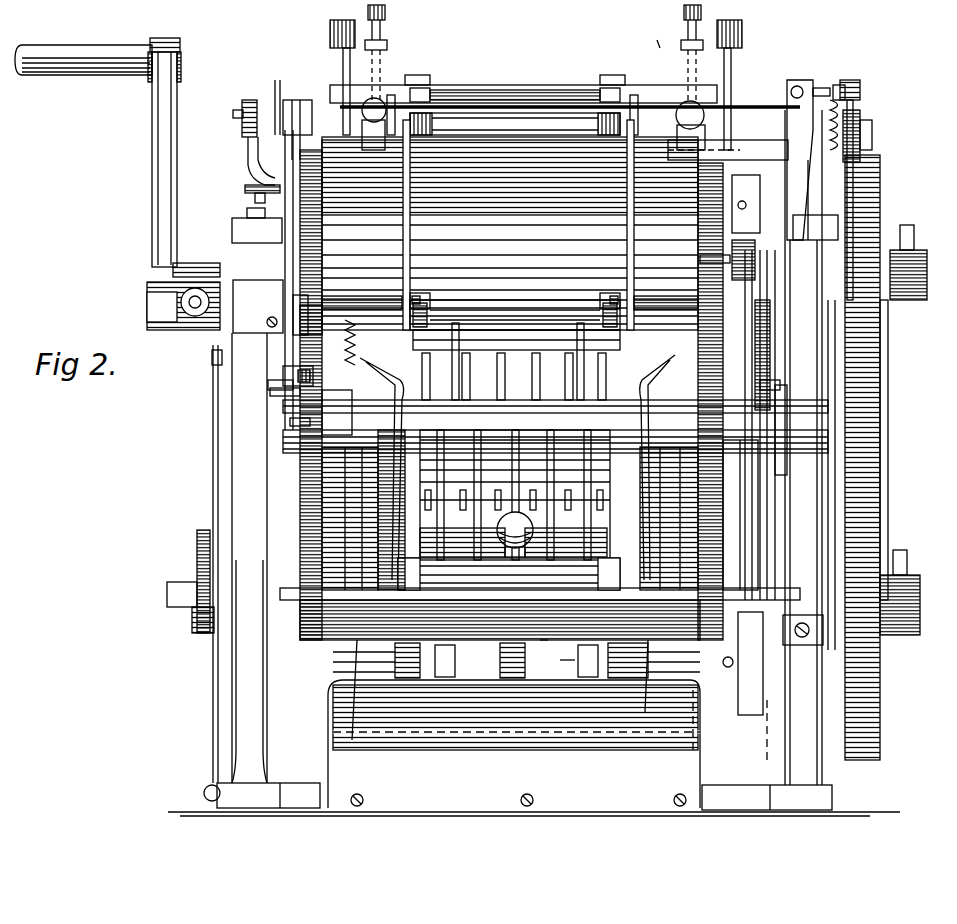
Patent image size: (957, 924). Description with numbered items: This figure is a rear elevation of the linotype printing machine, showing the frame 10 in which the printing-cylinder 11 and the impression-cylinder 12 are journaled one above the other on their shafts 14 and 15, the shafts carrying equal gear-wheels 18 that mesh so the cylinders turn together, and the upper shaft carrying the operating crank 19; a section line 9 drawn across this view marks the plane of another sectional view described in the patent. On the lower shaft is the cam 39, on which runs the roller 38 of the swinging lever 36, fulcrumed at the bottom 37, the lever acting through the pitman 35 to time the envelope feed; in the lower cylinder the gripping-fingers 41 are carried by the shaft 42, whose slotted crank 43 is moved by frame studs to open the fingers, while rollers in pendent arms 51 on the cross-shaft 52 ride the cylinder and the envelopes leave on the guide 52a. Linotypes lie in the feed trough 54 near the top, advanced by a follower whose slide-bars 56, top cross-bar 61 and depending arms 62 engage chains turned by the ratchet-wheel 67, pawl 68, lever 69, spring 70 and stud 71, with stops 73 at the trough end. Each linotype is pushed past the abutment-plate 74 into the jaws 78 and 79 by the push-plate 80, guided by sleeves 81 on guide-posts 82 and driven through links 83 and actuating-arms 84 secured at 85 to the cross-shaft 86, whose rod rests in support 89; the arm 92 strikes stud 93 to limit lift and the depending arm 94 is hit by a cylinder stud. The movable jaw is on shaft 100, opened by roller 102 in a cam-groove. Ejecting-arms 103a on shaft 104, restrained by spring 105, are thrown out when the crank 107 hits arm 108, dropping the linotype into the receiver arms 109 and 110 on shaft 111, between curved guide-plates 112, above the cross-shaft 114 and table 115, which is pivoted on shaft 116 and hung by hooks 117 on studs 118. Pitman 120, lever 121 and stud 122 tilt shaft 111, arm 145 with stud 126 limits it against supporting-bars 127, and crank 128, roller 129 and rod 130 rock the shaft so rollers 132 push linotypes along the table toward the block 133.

The right frame standard 9 is at (767, 460).
The frame 10 is at (232, 527).
The printing-cylinder 11 is at (510, 233).
The impression-cylinder 12 is at (700, 525).
The shaft 14 is at (147, 308).
The shaft 15 is at (920, 600).
The gear-wheels 18 is at (880, 378).
The crank 19 is at (152, 207).
The pitman 35 is at (222, 375).
The swinging lever 36 is at (215, 478).
The fulcrum 37 is at (204, 790).
The roller 38 is at (200, 633).
The cam 39 is at (197, 550).
The gripping-fingers 41 is at (590, 670).
The shaft 42 is at (560, 660).
The longitudinally-slotted crank 43 is at (740, 715).
The pendent arms 51 is at (385, 512).
The cross-shaft 52 is at (742, 453).
The guide 52a is at (514, 744).
The feed trough or table 54 is at (515, 124).
The slide-bars 56 is at (432, 122).
The top cross-bar 61 is at (530, 105).
The depending arms 62 is at (390, 95).
The ratchet-wheel 67 is at (862, 130).
The pawl 68 is at (860, 90).
The lever 69 is at (840, 160).
The spring 70 is at (819, 200).
The stud 71 is at (815, 212).
The stops 73 is at (425, 86).
The abutment-plate 74 is at (500, 88).
The printing-jaw 78 is at (516, 340).
The printing-jaw 79 is at (545, 300).
The push-plate 80 is at (657, 33).
The guide-sleeves 81 is at (330, 35).
The guide-posts 82 is at (282, 100).
The links 83 is at (387, 40).
The actuating-arms 84 is at (385, 15).
The securing means 85 is at (295, 100).
The cross-shaft 86 is at (285, 102).
The support 89 is at (805, 80).
The arm 92 is at (250, 162).
The stud 93 is at (245, 190).
The depending arm 94 is at (745, 225).
The shaft 100 is at (745, 280).
The roller 102 is at (715, 255).
The ejecting-arms 103a is at (420, 293).
The cross shaft or rod 104 is at (668, 266).
The spiral spring 105 is at (368, 342).
The crank 107 is at (325, 300).
The arm 108 is at (274, 330).
The arms 109 is at (470, 368).
The arms 110 is at (460, 338).
The shaft 111 is at (775, 366).
The vertical guide-plates 112 is at (518, 462).
The cross-shaft 114 is at (780, 385).
The table 115 is at (548, 645).
The cross-shaft 116 is at (730, 588).
The hooks 117 is at (410, 237).
The studs 118 is at (511, 699).
The pitman 120 is at (283, 375).
The lever 121 is at (232, 240).
The stud 122 is at (270, 290).
The stud 126 is at (270, 388).
The supporting-bars 127 is at (880, 395).
The crank 128 is at (770, 345).
The perforated roller 129 is at (770, 320).
The rod 130 is at (760, 300).
The rollers 132 is at (420, 578).
The block 133 is at (515, 508).
The arm 145 is at (268, 400).